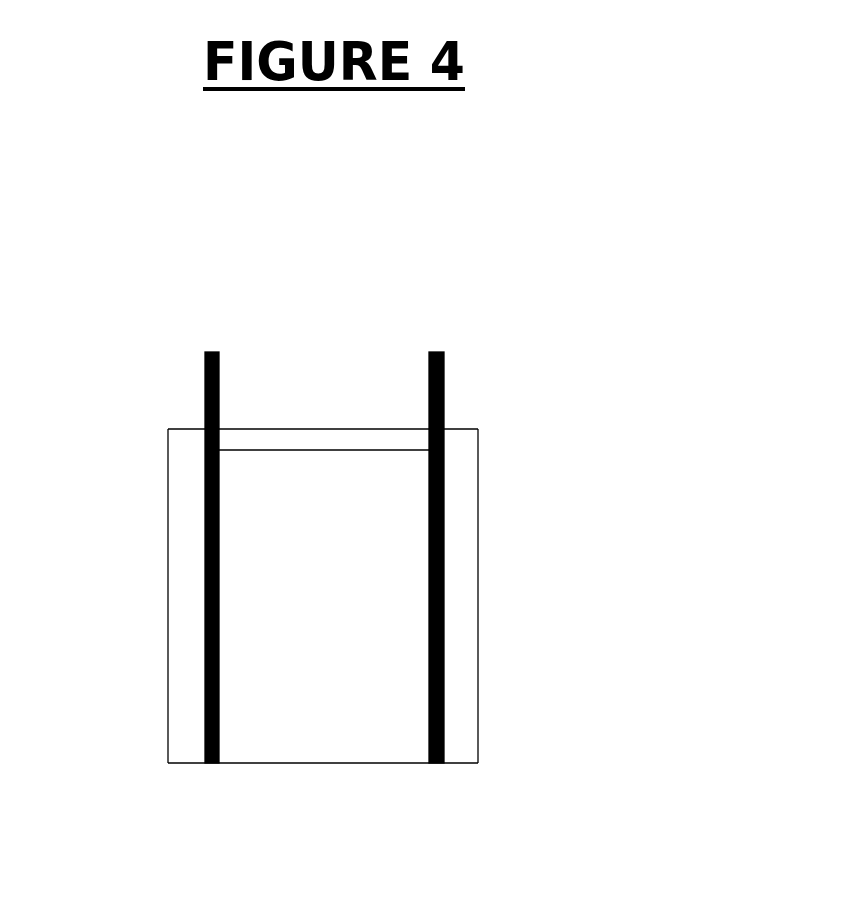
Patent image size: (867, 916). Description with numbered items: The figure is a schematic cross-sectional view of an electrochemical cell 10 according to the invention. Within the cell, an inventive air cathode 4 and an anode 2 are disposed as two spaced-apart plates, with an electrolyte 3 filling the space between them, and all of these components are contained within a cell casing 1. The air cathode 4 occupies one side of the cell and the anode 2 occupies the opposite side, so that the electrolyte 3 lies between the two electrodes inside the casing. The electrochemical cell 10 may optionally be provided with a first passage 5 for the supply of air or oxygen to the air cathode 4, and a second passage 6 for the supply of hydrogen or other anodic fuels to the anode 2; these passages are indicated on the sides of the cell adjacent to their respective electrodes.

The electrochemical cell 10 is at (640, 220).
The cell casing 1 is at (322, 450).
The anode 2 is at (205, 390).
The electrolyte 3 is at (343, 666).
The air cathode 4 is at (444, 391).
The first passage 5 is at (460, 591).
The second passage 6 is at (186, 588).